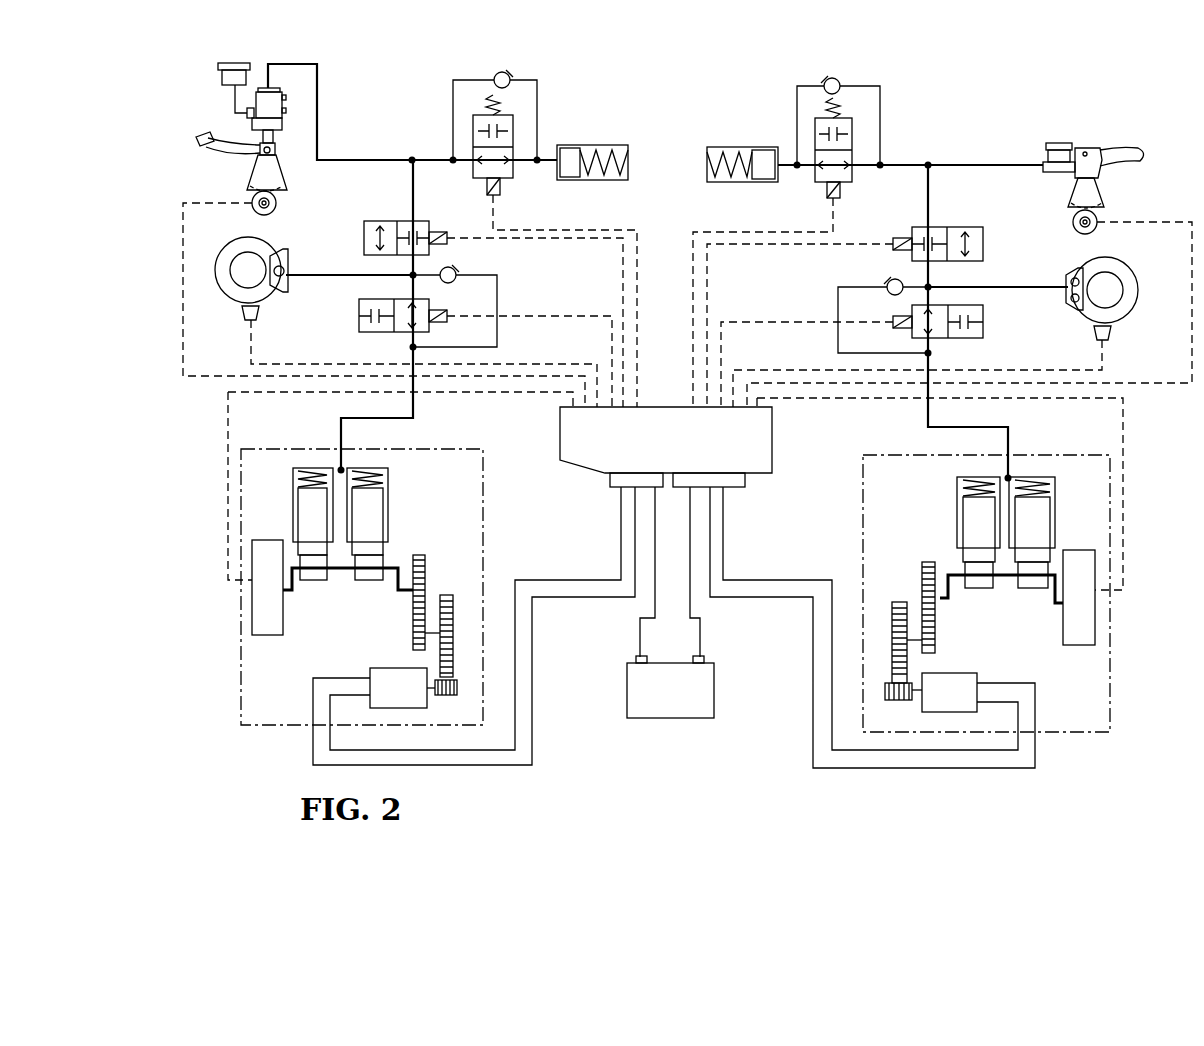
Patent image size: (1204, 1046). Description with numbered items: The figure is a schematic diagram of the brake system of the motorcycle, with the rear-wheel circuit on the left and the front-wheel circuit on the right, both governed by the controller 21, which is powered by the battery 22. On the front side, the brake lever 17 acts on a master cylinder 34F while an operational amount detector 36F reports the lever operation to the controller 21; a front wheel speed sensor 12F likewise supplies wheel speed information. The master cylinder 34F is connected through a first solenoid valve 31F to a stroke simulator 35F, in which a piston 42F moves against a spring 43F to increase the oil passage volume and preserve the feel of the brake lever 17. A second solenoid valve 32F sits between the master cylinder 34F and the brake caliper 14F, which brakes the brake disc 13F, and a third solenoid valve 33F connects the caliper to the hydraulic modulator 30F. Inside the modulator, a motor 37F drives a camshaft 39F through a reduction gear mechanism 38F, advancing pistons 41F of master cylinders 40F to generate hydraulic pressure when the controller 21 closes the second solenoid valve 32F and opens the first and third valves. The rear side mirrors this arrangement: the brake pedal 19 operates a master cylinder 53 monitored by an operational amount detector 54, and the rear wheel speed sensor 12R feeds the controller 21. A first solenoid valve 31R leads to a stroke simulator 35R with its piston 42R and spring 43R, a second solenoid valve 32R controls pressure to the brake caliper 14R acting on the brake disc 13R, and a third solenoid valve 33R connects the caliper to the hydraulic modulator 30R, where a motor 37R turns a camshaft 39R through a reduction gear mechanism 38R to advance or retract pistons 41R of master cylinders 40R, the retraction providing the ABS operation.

The brake pedal 19 is at (204, 136).
The master cylinder 53 is at (284, 106).
The operational amount detector 54 is at (251, 204).
The brake disc 13R is at (215, 270).
The brake caliper 14R is at (283, 258).
The rear wheel speed sensor 12R is at (248, 322).
The second solenoid valve 32R is at (380, 221).
The third solenoid valve 33R is at (376, 332).
The first solenoid valve 31R is at (478, 178).
The stroke simulator 35R is at (588, 145).
The piston 42R is at (570, 180).
The spring 43R is at (615, 180).
The stroke simulator 35F is at (736, 147).
The piston 42F is at (762, 182).
The spring 43F is at (720, 182).
The first solenoid valve 31F is at (848, 182).
The second solenoid valve 32F is at (952, 227).
The third solenoid valve 33F is at (946, 338).
The master cylinder 34F is at (1043, 167).
The brake lever 17 is at (1140, 150).
The operational amount detector 36F is at (1098, 222).
The brake caliper 14F is at (1068, 276).
The brake disc 13F is at (1131, 292).
The front wheel speed sensor 12F is at (1109, 336).
The controller 21 is at (772, 443).
The battery 22 is at (671, 718).
The hydraulic modulator 30R is at (241, 675).
The master cylinders 40R is at (312, 468).
The pistons 41R is at (305, 525).
The camshaft 39R is at (332, 571).
The reduction gear mechanism 38R is at (413, 632).
The motor 37R is at (390, 668).
The hydraulic modulator 30F is at (1110, 683).
The master cylinders 40F is at (980, 478).
The pistons 41F is at (970, 525).
The camshaft 39F is at (1010, 580).
The reduction gear mechanism 38F is at (935, 640).
The motor 37F is at (945, 673).